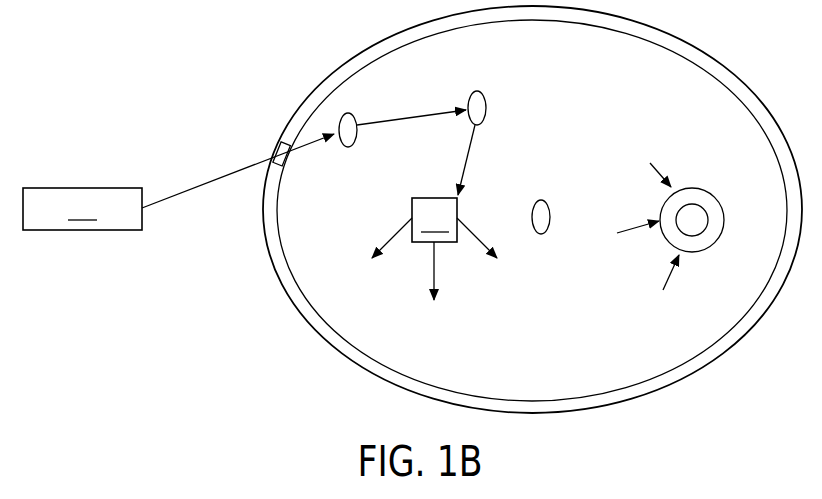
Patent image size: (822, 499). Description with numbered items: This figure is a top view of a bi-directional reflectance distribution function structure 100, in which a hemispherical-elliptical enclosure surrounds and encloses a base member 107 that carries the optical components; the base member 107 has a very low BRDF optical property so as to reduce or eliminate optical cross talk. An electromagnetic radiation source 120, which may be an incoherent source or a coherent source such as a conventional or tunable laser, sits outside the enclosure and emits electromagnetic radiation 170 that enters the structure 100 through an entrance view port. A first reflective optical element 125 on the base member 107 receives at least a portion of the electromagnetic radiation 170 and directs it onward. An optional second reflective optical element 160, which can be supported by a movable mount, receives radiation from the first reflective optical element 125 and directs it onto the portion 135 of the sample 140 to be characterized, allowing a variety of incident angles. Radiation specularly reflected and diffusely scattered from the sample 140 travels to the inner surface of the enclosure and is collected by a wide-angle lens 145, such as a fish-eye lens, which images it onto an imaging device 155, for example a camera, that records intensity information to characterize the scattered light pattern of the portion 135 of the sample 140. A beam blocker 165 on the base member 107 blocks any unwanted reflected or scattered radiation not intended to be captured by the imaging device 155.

The bi-directional reflectance distribution function structure 100 is at (215, 76).
The base member 107 is at (338, 350).
The electromagnetic radiation source 120 is at (82, 209).
The first reflective optical element 125 is at (346, 113).
The portion of sample 135 is at (385, 215).
The sample 140 is at (434, 220).
The wide-angle lens 145 is at (708, 189).
The imaging device 155 is at (700, 236).
The second reflective optical element 160 is at (487, 108).
The beam blocker 165 is at (543, 199).
The electromagnetic radiation 170 is at (196, 186).